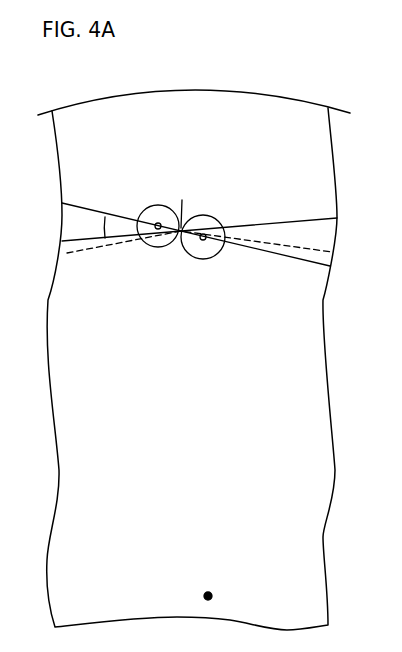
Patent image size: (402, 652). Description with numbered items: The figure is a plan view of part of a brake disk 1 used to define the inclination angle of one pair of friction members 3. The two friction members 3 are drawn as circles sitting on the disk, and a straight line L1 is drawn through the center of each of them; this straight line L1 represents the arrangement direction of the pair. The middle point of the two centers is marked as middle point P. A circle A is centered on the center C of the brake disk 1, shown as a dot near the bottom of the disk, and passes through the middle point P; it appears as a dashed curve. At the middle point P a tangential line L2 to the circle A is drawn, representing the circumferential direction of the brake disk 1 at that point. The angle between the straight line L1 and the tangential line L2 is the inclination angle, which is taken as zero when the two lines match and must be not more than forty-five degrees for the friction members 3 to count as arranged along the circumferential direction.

The brake disk 1 is at (270, 98).
The friction members 3 is at (158, 247).
The middle point P is at (182, 203).
The straight line L1 is at (253, 258).
The tangential line L2 is at (267, 222).
The circle A is at (68, 256).
The center C is at (209, 592).